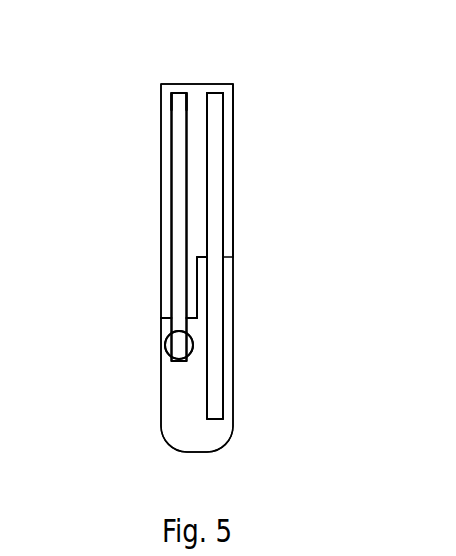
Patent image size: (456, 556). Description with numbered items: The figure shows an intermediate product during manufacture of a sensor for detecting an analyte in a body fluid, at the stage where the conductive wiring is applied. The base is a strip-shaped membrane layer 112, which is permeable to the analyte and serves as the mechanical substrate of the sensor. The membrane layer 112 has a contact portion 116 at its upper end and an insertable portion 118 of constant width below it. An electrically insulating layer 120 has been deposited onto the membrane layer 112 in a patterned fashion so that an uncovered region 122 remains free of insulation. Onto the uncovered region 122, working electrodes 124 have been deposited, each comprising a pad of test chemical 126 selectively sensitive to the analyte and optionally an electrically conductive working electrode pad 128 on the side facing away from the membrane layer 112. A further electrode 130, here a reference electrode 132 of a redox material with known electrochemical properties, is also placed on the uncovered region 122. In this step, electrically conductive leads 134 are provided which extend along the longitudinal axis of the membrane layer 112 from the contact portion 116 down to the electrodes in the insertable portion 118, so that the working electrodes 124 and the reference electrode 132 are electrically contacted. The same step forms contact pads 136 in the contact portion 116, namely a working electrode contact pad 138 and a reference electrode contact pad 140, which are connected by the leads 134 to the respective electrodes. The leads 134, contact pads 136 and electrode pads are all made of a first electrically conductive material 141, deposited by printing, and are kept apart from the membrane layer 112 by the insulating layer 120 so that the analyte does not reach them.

The membrane layer 112 is at (182, 393).
The contact portion 116 is at (250, 100).
The insertable portion 118 is at (251, 271).
The electrically insulating layer 120 is at (228, 172).
The uncovered region 122 is at (190, 405).
The working electrode 124 is at (210, 323).
The test chemical 126 is at (212, 342).
The working electrode pad 128 is at (212, 353).
The further electrode 130 is at (177, 345).
The reference electrode 132 is at (179, 345).
The electrically conductive lead 134 is at (179, 213).
The contact pad 136 is at (258, 43).
The working electrode contact pad 138 is at (215, 101).
The reference electrode contact pad 140 is at (179, 101).
The first electrically conductive material 141 is at (198, 256).